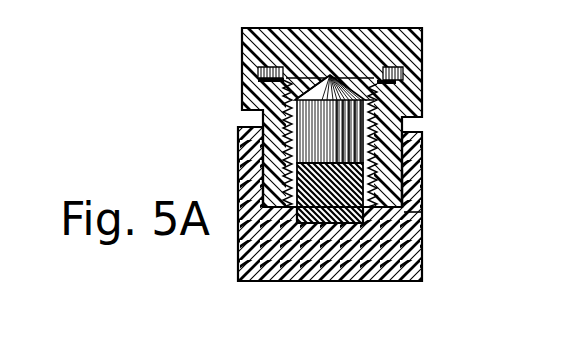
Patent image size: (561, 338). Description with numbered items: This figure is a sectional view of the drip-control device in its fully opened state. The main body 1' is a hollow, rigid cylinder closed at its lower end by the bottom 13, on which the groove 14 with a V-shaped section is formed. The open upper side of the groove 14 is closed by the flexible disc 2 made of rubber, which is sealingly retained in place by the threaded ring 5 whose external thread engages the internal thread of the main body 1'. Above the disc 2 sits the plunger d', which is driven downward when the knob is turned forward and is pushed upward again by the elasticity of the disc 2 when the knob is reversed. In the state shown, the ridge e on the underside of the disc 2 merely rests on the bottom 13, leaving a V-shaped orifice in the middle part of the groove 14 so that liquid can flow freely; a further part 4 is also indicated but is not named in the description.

The main body 1' is at (352, 127).
The flexible disc 2 is at (282, 205).
The clearance at neck 4 is at (403, 199).
The threaded ring 5 is at (388, 181).
The bottom 13 is at (348, 225).
The groove 14 is at (330, 227).
The plunger d' is at (262, 143).
The ridge e is at (408, 216).